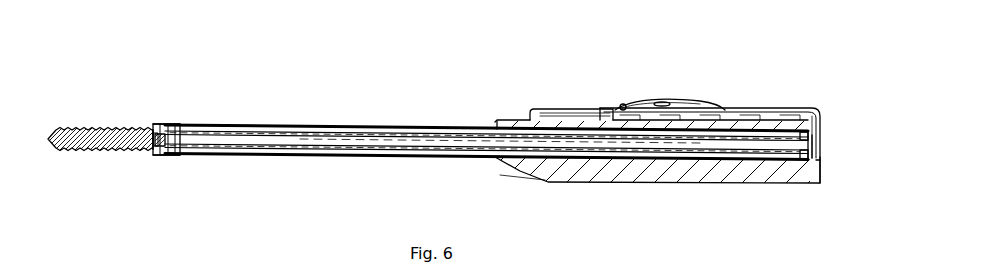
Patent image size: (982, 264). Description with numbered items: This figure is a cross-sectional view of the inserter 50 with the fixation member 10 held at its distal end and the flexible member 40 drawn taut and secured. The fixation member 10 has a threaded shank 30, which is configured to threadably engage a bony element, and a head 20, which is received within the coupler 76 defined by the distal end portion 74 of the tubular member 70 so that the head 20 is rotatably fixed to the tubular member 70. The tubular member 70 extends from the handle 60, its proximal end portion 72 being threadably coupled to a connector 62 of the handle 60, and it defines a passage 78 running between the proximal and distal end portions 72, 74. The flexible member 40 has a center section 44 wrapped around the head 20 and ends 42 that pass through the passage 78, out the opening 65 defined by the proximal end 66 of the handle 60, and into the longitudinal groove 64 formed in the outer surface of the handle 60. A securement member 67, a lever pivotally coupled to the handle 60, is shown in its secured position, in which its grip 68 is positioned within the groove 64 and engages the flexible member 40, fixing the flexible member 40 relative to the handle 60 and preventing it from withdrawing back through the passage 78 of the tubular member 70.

The fixation member 10 is at (106, 167).
The head 20 is at (160, 155).
The shank 30 is at (96, 150).
The flexible member 40 is at (822, 135).
The ends 42 is at (560, 109).
The center section 44 is at (320, 128).
The inserter 50 is at (463, 47).
The handle 60 is at (708, 185).
The connector 62 is at (508, 121).
The longitudinal groove 64 is at (755, 107).
The opening 65 is at (823, 151).
The proximal end 66 is at (822, 184).
The securement member 67 is at (655, 100).
The grip 68 is at (622, 104).
The tubular member 70 is at (393, 158).
The proximal end portion 72 is at (611, 162).
The distal end portion 74 is at (178, 155).
The coupler 76 is at (166, 124).
The passage 78 is at (422, 141).